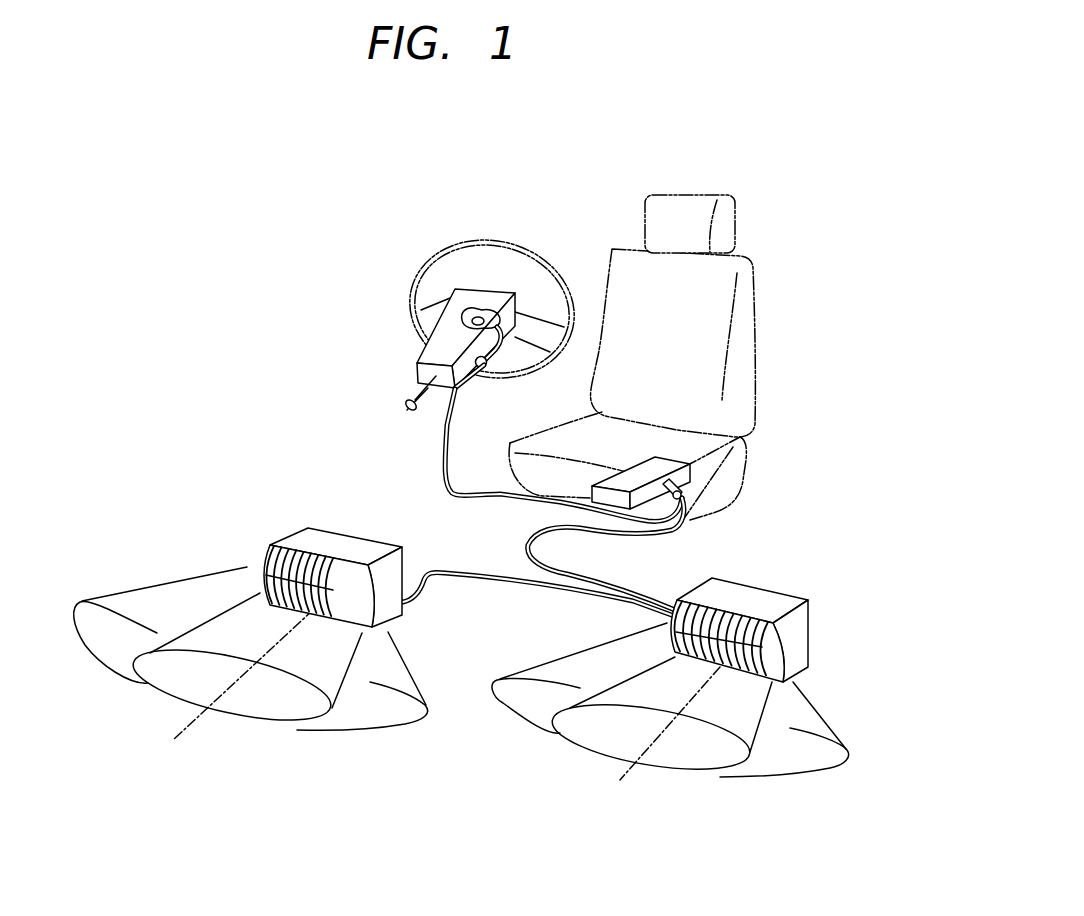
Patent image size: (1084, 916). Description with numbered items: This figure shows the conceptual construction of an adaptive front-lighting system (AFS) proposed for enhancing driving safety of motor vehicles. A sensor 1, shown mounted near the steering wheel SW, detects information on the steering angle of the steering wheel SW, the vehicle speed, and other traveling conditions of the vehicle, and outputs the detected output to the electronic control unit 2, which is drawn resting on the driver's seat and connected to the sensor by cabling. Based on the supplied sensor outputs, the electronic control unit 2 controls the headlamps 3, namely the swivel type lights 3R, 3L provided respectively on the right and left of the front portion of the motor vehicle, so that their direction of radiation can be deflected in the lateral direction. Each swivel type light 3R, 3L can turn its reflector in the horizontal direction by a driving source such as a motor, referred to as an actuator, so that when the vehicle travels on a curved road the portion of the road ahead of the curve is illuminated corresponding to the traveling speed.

The steering wheel SW is at (481, 239).
The sensor 1 is at (487, 316).
The electronic control unit 2 is at (663, 465).
The headlamps 3 is at (374, 469).
The swivel type light 3R is at (320, 527).
The swivel type light 3L is at (749, 588).